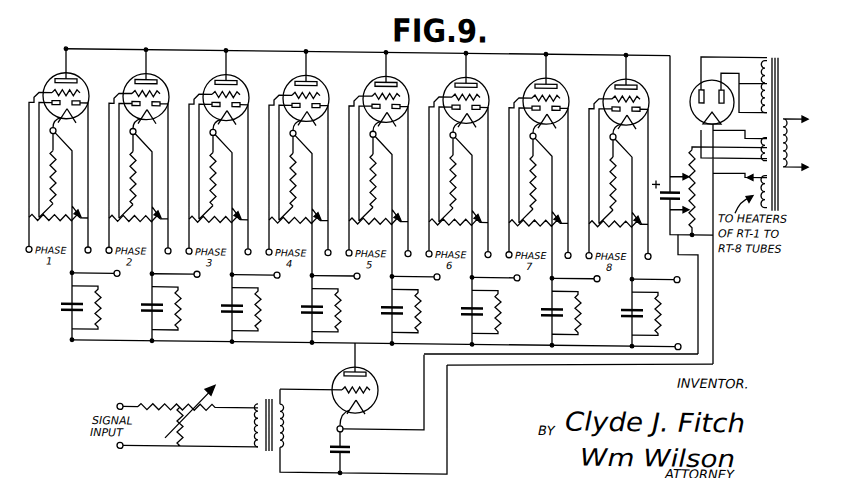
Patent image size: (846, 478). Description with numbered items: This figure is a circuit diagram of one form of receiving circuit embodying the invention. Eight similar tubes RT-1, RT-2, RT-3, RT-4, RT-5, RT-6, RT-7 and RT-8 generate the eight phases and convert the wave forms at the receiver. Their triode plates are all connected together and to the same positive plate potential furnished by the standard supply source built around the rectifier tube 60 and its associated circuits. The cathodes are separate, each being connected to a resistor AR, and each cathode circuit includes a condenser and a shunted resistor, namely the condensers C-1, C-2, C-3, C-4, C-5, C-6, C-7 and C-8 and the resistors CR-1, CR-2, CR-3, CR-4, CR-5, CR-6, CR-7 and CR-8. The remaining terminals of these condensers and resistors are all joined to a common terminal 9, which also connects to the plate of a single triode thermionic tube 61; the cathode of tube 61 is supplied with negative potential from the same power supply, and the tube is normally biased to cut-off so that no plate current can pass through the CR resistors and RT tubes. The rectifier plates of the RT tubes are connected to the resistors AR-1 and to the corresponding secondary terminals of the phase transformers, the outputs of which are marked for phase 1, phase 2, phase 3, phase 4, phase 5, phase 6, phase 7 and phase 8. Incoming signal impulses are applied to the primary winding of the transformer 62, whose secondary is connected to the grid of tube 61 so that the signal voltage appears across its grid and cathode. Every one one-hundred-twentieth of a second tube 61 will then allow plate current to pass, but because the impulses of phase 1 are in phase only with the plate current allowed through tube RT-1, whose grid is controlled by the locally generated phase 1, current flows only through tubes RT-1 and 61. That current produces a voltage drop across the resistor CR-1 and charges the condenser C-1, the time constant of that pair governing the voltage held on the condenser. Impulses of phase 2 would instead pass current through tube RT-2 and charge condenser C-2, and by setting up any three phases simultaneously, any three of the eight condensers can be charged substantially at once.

The thermionic tube RT-1 is at (51, 76).
The thermionic tube RT-2 is at (131, 76).
The thermionic tube RT-3 is at (211, 76).
The thermionic tube RT-4 is at (291, 76).
The thermionic tube RT-5 is at (371, 76).
The thermionic tube RT-6 is at (451, 76).
The thermionic tube RT-7 is at (531, 76).
The thermionic tube RT-8 is at (611, 76).
The resistor AR is at (341, 181).
The resistor AR-1 is at (334, 226).
The phase 1 is at (102, 274).
The phase 2 is at (182, 275).
The phase 3 is at (262, 276).
The phase 4 is at (342, 277).
The phase 5 is at (422, 277).
The phase 6 is at (502, 278).
The phase 7 is at (582, 279).
The phase 8 is at (662, 280).
The common terminal 9 is at (683, 340).
The condenser C-1 is at (63, 314).
The condenser C-2 is at (143, 315).
The condenser C-3 is at (223, 316).
The condenser C-4 is at (303, 317).
The condenser C-5 is at (383, 318).
The condenser C-6 is at (463, 319).
The condenser C-7 is at (543, 320).
The condenser C-8 is at (623, 321).
The shunted resistor CR-1 is at (99, 308).
The shunted resistor CR-2 is at (179, 309).
The shunted resistor CR-3 is at (259, 310).
The shunted resistor CR-4 is at (339, 311).
The shunted resistor CR-5 is at (419, 311).
The shunted resistor CR-6 is at (499, 312).
The shunted resistor CR-7 is at (579, 313).
The shunted resistor CR-8 is at (659, 314).
The rectifier tube 60 is at (698, 84).
The triode thermionic tube 61 is at (376, 382).
The transformer 62 is at (266, 403).